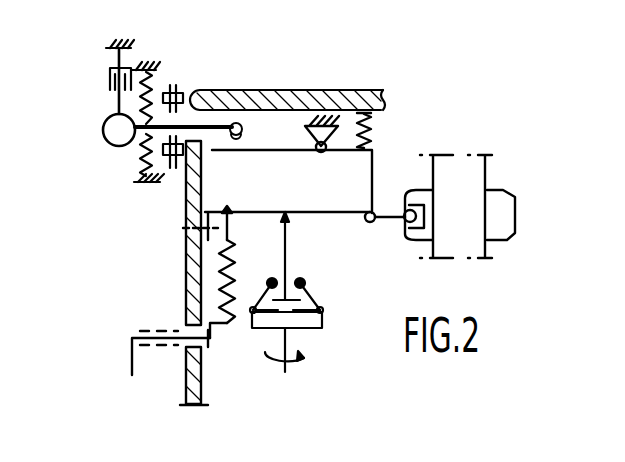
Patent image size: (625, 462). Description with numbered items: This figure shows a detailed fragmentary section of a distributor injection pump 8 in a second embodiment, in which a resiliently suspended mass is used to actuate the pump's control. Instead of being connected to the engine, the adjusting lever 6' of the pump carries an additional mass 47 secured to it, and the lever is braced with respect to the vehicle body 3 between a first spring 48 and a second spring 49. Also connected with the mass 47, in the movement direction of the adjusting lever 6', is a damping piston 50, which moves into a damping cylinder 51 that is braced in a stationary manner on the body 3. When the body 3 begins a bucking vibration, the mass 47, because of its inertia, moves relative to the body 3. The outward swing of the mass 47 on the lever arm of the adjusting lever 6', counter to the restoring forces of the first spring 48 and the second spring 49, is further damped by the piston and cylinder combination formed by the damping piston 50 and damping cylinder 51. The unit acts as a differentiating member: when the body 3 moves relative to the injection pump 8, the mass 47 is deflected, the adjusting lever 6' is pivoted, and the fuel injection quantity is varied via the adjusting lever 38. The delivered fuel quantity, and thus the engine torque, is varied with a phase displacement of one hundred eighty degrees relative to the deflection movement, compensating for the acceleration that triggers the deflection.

The body 3 is at (120, 45).
The second spring 49 is at (152, 78).
The damping cylinder 51 is at (110, 78).
The damping piston 50 is at (110, 95).
The additional mass 47 is at (103, 147).
The first spring 48 is at (140, 168).
The adjusting lever 6' is at (188, 90).
The adjusting lever 38 is at (278, 148).
The distributor injection pump 8 is at (180, 282).